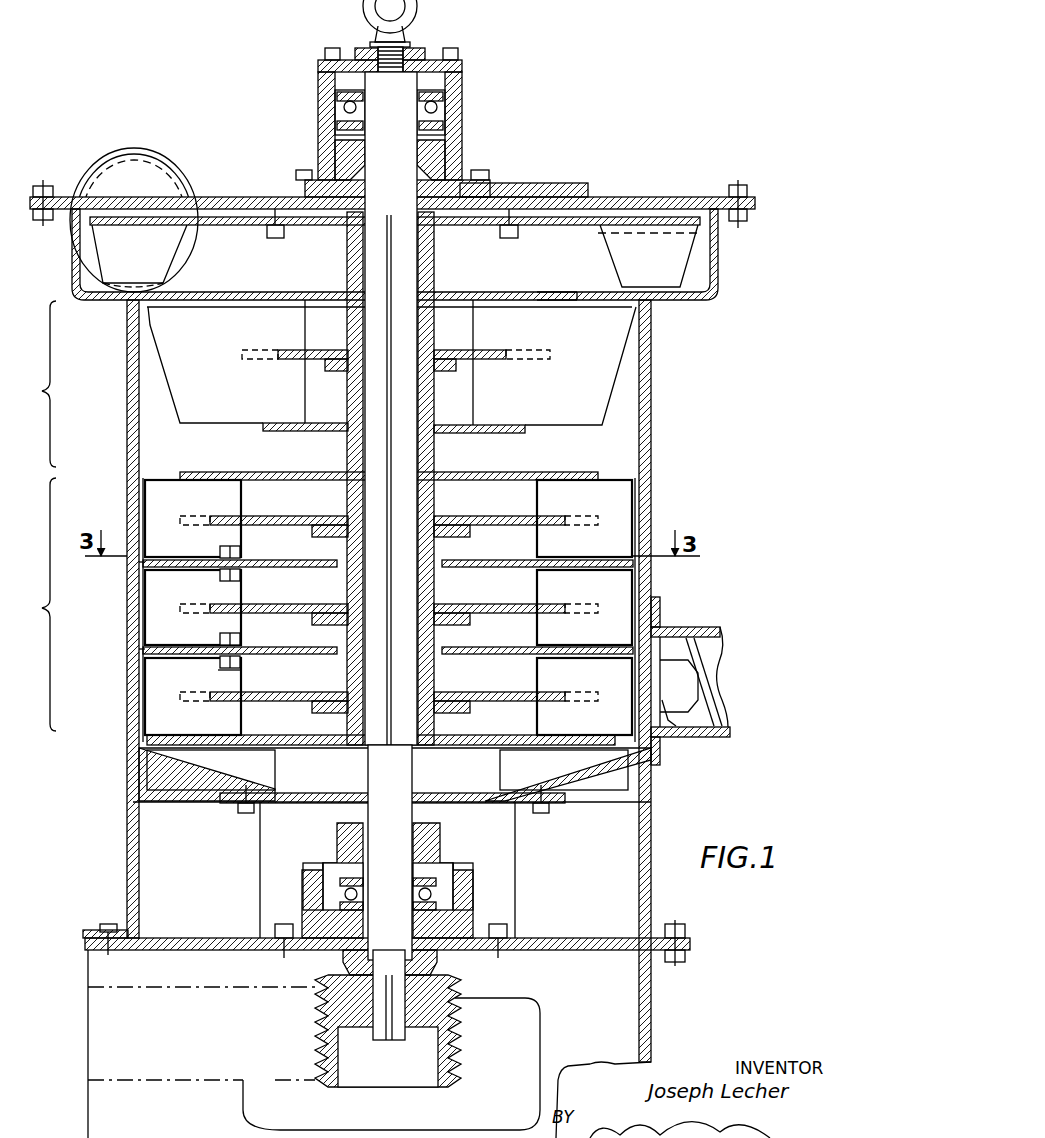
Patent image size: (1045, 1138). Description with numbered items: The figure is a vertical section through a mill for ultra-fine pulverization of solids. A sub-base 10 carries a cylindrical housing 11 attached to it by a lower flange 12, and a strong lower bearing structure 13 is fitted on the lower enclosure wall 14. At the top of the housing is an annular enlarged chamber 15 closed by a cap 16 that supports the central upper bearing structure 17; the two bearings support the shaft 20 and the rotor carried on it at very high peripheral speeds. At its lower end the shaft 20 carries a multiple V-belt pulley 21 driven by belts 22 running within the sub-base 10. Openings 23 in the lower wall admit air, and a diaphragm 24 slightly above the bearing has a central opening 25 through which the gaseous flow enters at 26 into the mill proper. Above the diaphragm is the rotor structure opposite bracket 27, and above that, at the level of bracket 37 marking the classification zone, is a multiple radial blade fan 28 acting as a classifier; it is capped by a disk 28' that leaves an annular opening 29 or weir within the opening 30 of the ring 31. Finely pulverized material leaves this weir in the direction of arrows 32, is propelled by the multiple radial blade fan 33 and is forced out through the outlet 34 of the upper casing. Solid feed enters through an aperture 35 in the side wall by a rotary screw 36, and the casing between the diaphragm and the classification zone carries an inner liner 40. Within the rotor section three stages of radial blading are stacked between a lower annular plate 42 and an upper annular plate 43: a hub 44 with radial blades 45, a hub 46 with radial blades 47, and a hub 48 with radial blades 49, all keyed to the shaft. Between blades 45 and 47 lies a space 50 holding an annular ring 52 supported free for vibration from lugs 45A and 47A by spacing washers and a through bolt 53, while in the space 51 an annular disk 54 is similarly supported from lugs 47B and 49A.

The sub-base 10 is at (655, 1010).
The cylindrical housing 11 is at (654, 832).
The lower flange 12 is at (689, 932).
The lower bearing structure 13 is at (479, 893).
The lower enclosure wall 14 is at (581, 944).
The annular enlarged chamber 15 is at (720, 270).
The cap 16 is at (557, 197).
The upper bearing structure 17 is at (468, 100).
The shaft 20 is at (410, 272).
The multiple V-belt pulley 21 is at (443, 1088).
The belts 22 is at (186, 1082).
The openings 23 is at (268, 888).
The diaphragm 24 is at (186, 795).
The central opening 25 is at (309, 792).
The gaseous flow entering 26 is at (449, 786).
The rotor structure 27 is at (336, 792).
The multiple radial blade fan 28 is at (617, 325).
The disk 28' is at (538, 281).
The annular opening 29 is at (556, 296).
The opening 30 is at (578, 299).
The ring 31 is at (597, 303).
The arrows 32 is at (220, 272).
The multiple radial blade fan 33 is at (135, 252).
The outlet 34 is at (134, 181).
The aperture 35 is at (668, 643).
The rotary screw 36 is at (708, 672).
The classification zone 37 is at (34, 384).
The inner liner 40 is at (140, 738).
The lower annular plate 42 is at (597, 742).
The upper annular plate 43 is at (590, 472).
The hub 44 is at (436, 680).
The radial blades 45 is at (155, 688).
The lugs 45A is at (241, 662).
The hub 46 is at (436, 589).
The radial blades 47 is at (174, 601).
The lugs 47A is at (241, 640).
The lugs 47B is at (241, 576).
The hub 48 is at (436, 503).
The radial blades 49 is at (186, 508).
The lugs 49A is at (241, 553).
The space 50 is at (122, 646).
The space 51 is at (122, 560).
The annular ring 52 is at (178, 655).
The through bolt 53 is at (241, 671).
The annular disk 54 is at (190, 562).